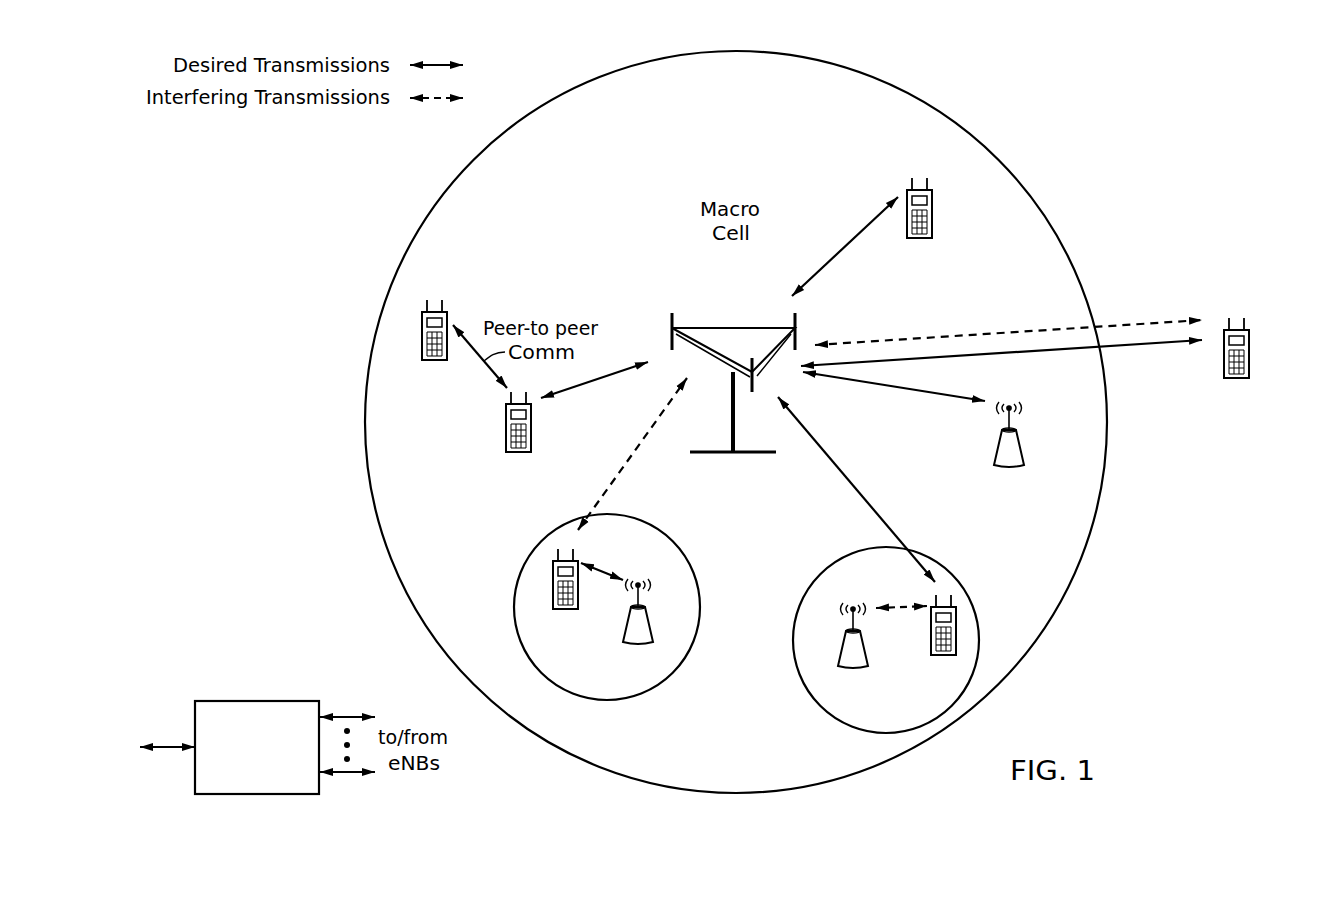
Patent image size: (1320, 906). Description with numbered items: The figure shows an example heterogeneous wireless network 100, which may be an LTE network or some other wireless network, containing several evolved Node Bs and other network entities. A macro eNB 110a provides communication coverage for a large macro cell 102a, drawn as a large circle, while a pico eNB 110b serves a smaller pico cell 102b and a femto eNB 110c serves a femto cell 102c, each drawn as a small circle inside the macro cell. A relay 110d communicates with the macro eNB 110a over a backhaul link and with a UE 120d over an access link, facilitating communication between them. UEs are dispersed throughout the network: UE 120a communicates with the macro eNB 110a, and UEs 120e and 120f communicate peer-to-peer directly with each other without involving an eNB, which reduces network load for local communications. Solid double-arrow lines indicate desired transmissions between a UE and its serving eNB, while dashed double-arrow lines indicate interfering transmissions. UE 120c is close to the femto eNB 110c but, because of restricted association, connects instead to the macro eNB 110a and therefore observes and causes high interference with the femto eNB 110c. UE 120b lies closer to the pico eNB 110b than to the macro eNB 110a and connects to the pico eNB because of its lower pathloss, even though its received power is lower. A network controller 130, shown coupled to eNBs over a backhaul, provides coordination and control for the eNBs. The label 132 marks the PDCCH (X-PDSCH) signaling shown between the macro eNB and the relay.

The heterogeneous wireless network 100 is at (1144, 74).
The macro cell 102a is at (977, 134).
The pico cell 102b is at (684, 539).
The femto cell 102c is at (810, 579).
The macro eNB 110a is at (733, 327).
The pico eNB 110b is at (654, 628).
The femto eNB 110c is at (843, 651).
The relay 110d is at (1009, 405).
The UE 120a is at (932, 204).
The UE 120b is at (561, 611).
The UE 120c is at (937, 657).
The UE 120d is at (1249, 342).
The UE 120e is at (531, 433).
The UE 120f is at (447, 312).
The network controller 130 is at (258, 701).
The PDCCH (X-PDSCH) 132 is at (892, 432).